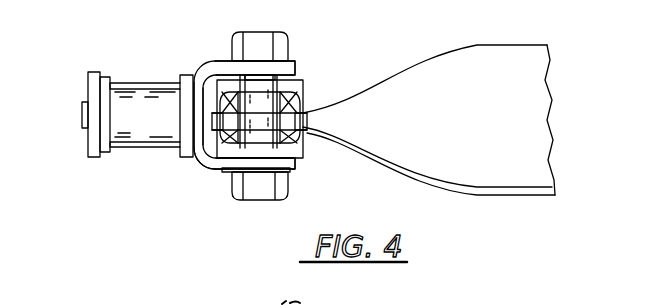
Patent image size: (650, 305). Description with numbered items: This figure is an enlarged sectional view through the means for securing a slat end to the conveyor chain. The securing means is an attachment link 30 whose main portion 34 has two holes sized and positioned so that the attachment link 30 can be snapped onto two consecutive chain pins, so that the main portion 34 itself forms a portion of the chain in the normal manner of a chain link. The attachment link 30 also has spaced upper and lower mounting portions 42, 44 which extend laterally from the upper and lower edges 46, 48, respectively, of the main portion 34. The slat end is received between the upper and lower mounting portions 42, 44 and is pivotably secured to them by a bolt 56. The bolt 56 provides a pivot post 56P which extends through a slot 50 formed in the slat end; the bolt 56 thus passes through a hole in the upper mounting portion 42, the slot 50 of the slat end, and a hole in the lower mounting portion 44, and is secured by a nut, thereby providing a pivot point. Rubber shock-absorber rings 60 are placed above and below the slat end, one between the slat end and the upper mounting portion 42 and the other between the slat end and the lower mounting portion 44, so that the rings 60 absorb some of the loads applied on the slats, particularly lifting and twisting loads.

The attachment link 30 is at (200, 72).
The main portion 34 is at (202, 72).
The upper mounting portion 42 is at (282, 65).
The lower mounting portion 44 is at (280, 165).
The upper edge 46 is at (212, 70).
The lower edge 48 is at (200, 163).
The slot 50 is at (235, 145).
The bolt 56 is at (262, 188).
The pivot post 56P is at (263, 110).
The rubber shock-absorber rings 60 is at (292, 83).